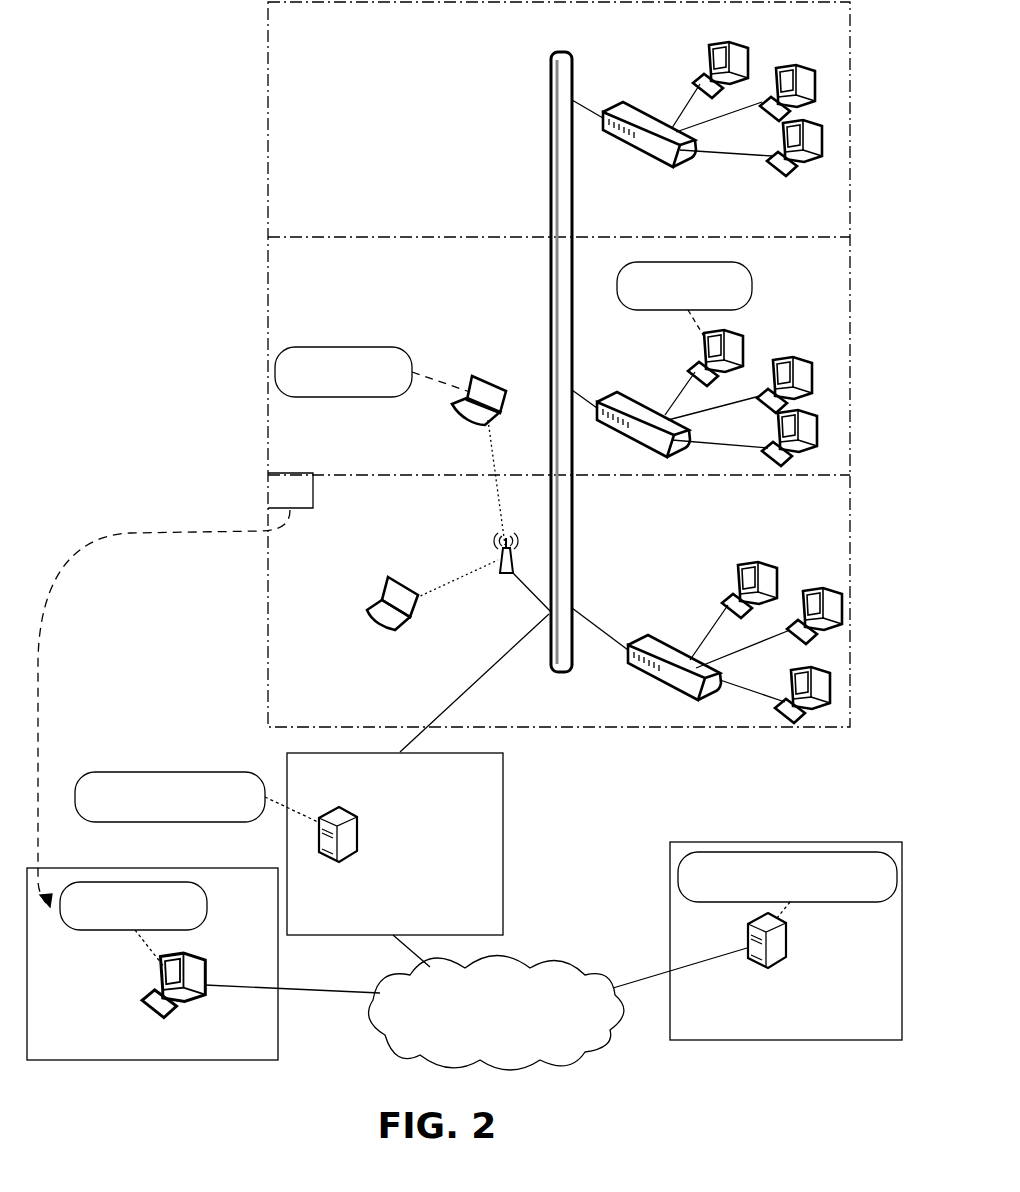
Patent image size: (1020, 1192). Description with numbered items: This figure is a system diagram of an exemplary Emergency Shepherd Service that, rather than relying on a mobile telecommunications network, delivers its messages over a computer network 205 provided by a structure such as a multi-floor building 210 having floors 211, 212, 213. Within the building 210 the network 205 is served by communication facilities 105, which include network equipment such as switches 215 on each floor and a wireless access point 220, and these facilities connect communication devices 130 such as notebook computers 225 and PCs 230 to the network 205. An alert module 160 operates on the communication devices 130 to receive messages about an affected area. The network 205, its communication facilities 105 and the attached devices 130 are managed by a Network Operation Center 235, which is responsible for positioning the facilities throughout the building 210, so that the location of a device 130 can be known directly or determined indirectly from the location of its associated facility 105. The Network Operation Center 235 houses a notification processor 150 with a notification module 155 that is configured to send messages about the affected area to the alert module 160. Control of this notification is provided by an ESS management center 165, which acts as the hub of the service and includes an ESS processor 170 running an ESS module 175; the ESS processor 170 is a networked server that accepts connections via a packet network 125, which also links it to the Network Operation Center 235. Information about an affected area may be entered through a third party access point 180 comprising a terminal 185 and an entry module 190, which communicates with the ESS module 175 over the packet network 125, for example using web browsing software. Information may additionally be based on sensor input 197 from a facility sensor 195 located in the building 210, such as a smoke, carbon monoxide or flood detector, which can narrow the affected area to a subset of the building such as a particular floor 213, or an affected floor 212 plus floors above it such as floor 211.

The communication facilities 105 is at (572, 374).
The packet network 125 is at (558, 1009).
The communication devices 130 is at (629, 325).
The notification processor 150 is at (338, 869).
The notification module 155 is at (196, 797).
The alert module 160 is at (513, 329).
The ESS management center 165 is at (786, 965).
The ESS processor 170 is at (767, 965).
The ESS module 175 is at (787, 885).
The third party access point 180 is at (152, 987).
The terminal 185 is at (235, 1007).
The entry module 190 is at (133, 925).
The sensor 195 is at (202, 460).
The sensor input 197 is at (164, 708).
The computer network 205 is at (551, 123).
The building 210 is at (460, 364).
The floor 211 is at (281, 130).
The floor 212 is at (281, 315).
The floor 213 is at (280, 699).
The switches 215 is at (708, 382).
The wireless access points 220 is at (508, 578).
The notebook computers 225 is at (385, 626).
The PCs 230 is at (790, 168).
The Network Operation Center 235 is at (395, 860).